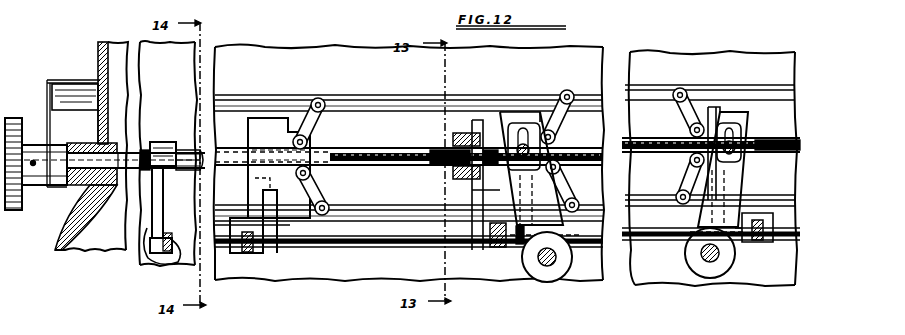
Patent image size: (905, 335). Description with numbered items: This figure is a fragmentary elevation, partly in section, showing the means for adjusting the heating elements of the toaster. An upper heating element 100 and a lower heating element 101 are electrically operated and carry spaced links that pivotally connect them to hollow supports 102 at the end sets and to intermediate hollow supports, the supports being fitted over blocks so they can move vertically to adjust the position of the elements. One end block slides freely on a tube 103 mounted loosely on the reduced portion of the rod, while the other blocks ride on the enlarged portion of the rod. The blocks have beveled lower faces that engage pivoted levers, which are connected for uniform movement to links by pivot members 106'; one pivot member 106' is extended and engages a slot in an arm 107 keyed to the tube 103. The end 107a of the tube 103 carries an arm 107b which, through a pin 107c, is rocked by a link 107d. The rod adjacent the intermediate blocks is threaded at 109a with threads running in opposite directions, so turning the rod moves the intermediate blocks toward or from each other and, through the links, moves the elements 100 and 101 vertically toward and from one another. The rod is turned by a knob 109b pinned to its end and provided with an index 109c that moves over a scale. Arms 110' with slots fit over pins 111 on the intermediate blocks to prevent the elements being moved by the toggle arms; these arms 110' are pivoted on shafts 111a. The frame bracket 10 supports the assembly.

The frame bracket 10 is at (73, 243).
The upper heating element 100 is at (366, 100).
The lower heating element 101 is at (409, 201).
The hollow supports 102 is at (271, 185).
The tube 103 is at (374, 148).
The pivot members 106' is at (409, 255).
The arm 107 is at (455, 180).
The end of the tube 107a is at (170, 142).
The arm 107b is at (150, 232).
The pin 107c is at (158, 262).
The link 107d is at (176, 255).
The threaded portion of the rod 109a is at (664, 126).
The knob 109b is at (16, 118).
The index 109c is at (51, 80).
The arms 110' is at (546, 173).
The pins 111 is at (515, 145).
The shafts 111a is at (705, 255).